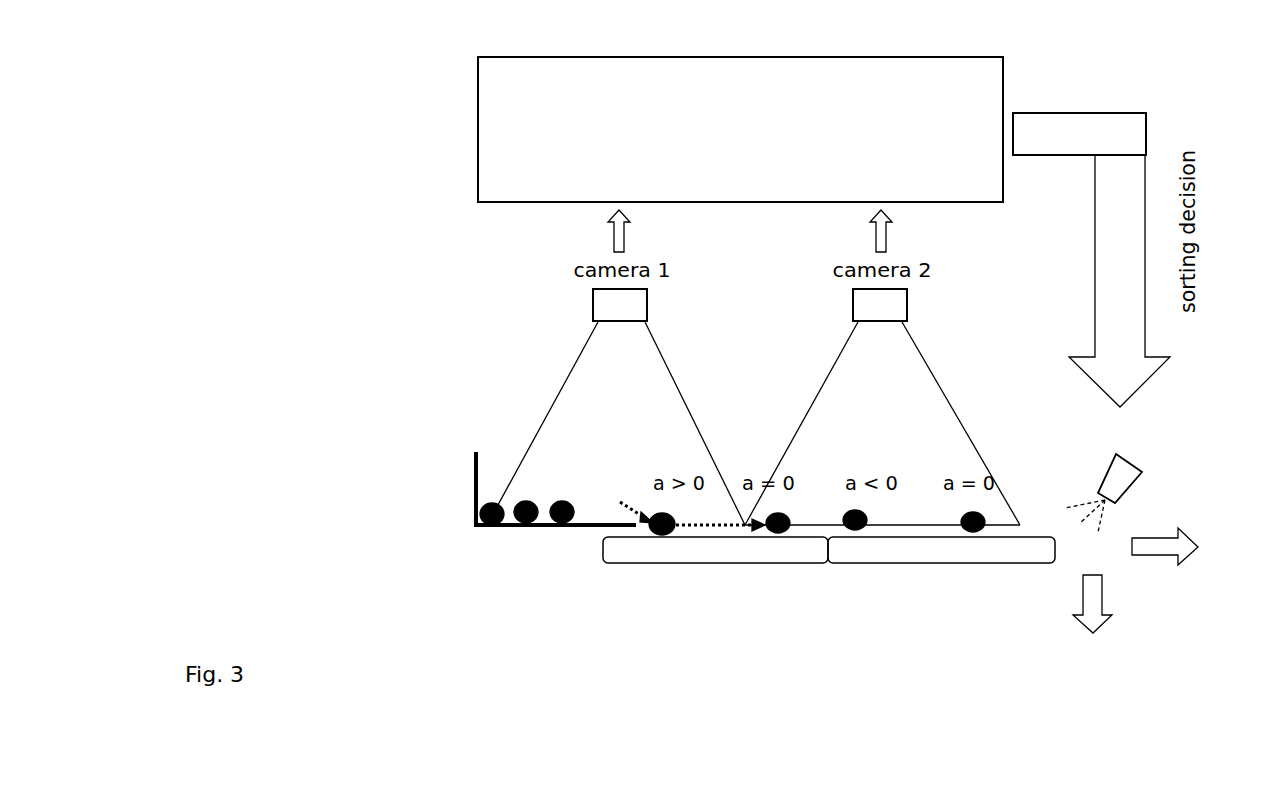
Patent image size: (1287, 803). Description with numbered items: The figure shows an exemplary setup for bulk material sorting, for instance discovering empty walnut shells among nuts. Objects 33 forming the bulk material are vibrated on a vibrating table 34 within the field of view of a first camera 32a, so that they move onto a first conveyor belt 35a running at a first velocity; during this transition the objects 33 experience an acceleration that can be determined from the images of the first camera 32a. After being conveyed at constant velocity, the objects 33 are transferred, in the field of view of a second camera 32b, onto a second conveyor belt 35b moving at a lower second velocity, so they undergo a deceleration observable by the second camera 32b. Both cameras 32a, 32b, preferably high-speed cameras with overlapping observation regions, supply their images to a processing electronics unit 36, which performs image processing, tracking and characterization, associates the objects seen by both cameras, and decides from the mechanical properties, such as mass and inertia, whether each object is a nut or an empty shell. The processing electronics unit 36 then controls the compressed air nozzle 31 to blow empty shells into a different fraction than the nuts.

The compressed air nozzle 31 is at (1132, 463).
The first camera 32a is at (593, 305).
The second camera 32b is at (853, 307).
The objects 33 is at (490, 530).
The vibrating table 34 is at (473, 467).
The first conveyor belt 35a is at (615, 563).
The second conveyor belt 35b is at (1049, 563).
The processing electronics unit 36 is at (478, 130).